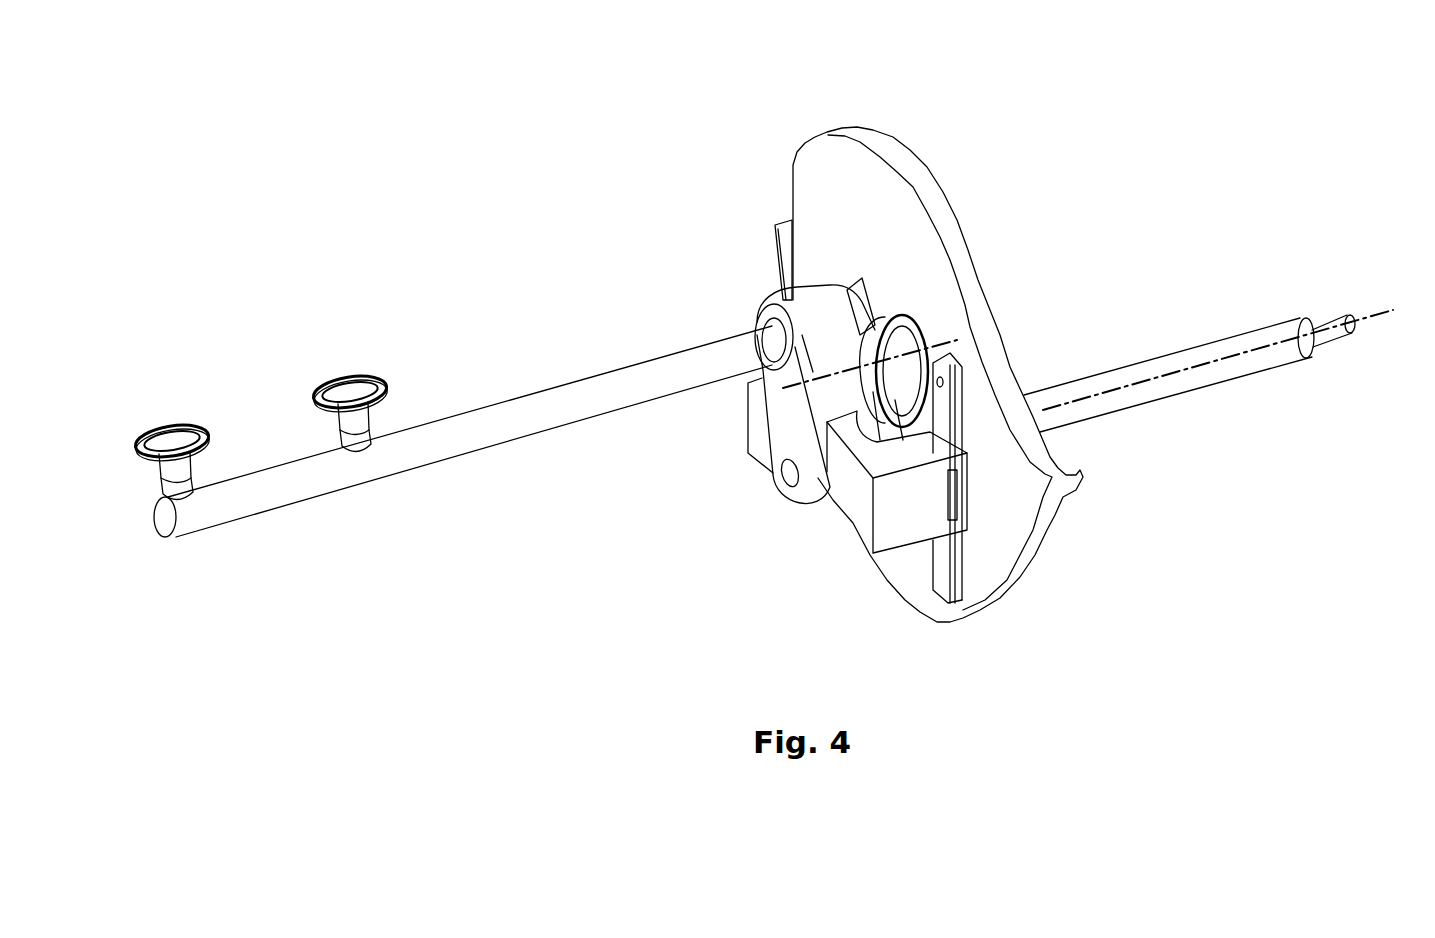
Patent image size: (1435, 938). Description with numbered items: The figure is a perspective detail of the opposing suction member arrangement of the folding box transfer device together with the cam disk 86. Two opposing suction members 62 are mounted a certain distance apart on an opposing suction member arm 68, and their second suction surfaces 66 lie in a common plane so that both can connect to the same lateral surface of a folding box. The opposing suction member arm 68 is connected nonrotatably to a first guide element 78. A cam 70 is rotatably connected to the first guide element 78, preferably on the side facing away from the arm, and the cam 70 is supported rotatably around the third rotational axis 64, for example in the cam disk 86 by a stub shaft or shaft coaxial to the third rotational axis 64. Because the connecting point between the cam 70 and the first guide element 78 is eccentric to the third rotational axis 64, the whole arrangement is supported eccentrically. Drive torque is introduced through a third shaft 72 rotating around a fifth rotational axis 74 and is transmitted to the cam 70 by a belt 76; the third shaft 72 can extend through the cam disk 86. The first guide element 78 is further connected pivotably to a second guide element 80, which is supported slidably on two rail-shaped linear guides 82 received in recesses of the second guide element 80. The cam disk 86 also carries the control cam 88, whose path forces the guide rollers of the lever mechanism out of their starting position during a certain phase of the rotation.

The opposing suction member 62 is at (208, 433).
The third rotational axis 64 is at (932, 343).
The second suction surface 66 is at (167, 427).
The opposing suction member arm 68 is at (547, 415).
The cam 70 is at (878, 340).
The third shaft 72 is at (1242, 343).
The fifth rotational axis 74 is at (1365, 317).
The belt 76 is at (903, 343).
The first guide element 78 is at (782, 433).
The second guide element 80 is at (852, 507).
The linear guide 82 is at (857, 282).
The cam disk 86 is at (822, 197).
The control cam 88 is at (862, 140).